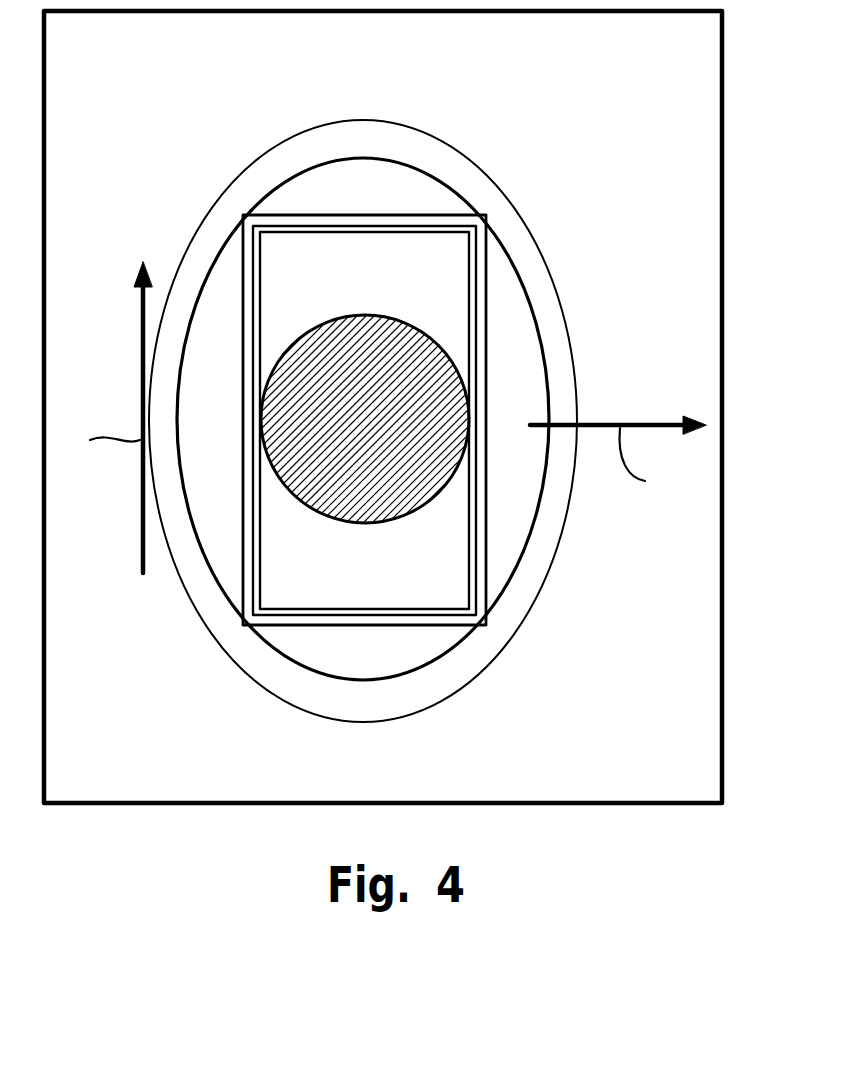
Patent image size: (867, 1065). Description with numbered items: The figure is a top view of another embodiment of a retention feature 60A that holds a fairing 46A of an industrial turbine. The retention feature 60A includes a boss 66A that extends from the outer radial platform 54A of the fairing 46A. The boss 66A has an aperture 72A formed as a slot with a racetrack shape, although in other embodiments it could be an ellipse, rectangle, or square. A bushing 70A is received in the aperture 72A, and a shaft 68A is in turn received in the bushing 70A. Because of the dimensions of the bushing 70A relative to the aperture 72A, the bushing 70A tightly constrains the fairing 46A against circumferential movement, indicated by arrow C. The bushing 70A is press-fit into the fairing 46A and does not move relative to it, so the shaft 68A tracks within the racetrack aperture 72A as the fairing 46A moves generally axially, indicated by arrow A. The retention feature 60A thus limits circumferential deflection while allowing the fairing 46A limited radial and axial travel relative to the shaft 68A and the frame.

The fairing 46A is at (384, 388).
The outer radial platform 54A is at (389, 93).
The boss 66A is at (225, 551).
The aperture 72A is at (494, 213).
The bushing 70A is at (481, 288).
The retention feature 60A is at (347, 617).
The shaft 68A is at (405, 460).